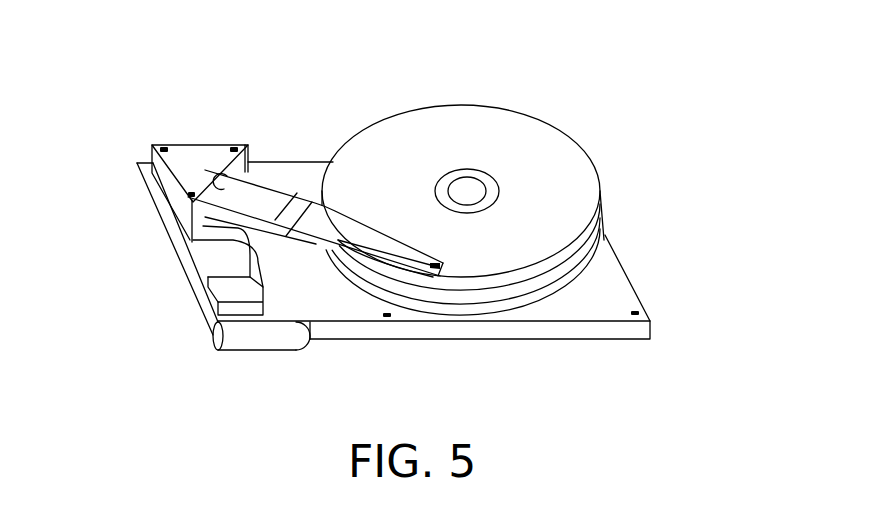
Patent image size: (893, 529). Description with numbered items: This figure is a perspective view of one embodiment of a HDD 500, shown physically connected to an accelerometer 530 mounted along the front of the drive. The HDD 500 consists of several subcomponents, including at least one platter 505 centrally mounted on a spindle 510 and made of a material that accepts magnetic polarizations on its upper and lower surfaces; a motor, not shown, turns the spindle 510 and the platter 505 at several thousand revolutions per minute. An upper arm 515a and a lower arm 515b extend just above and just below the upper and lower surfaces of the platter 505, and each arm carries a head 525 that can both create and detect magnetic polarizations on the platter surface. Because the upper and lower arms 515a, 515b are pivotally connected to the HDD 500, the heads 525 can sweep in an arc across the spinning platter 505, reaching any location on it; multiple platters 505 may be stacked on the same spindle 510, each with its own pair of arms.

The HDD 500 is at (149, 202).
The platter 505 is at (553, 208).
The spindle 510 is at (465, 192).
The upper arm 515a is at (323, 204).
The lower arm 515b is at (315, 243).
The head 525 is at (443, 270).
The accelerometer 530 is at (302, 350).